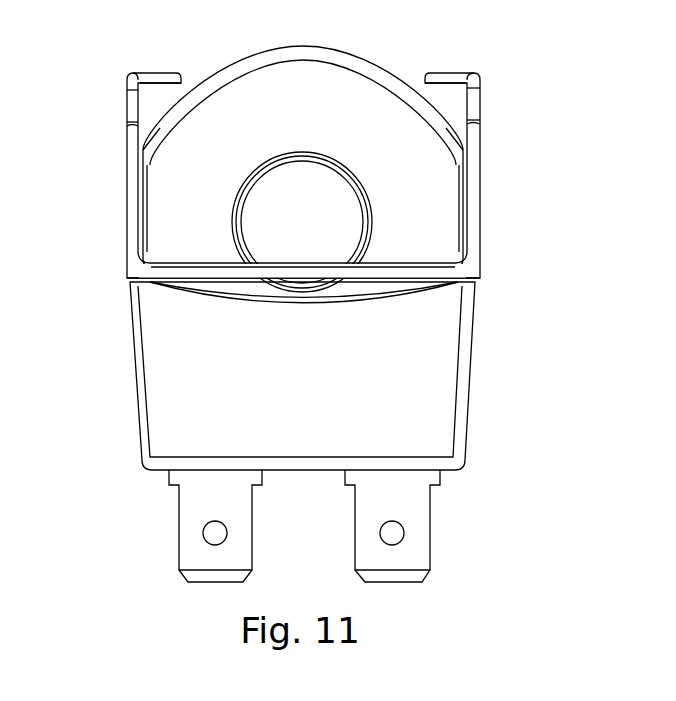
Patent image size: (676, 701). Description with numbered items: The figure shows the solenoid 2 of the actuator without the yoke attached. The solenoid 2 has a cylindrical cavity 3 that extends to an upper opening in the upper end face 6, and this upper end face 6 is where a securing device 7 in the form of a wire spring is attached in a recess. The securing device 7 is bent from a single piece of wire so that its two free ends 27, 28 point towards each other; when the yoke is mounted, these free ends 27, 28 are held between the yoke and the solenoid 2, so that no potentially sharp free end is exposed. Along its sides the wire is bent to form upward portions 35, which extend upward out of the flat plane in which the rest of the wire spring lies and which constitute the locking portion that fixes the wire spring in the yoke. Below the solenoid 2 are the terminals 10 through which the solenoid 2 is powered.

The solenoid 2 is at (552, 294).
The cylindrical cavity 3 is at (295, 233).
The upper end face 6 is at (435, 387).
The securing device 7 is at (131, 167).
The terminals 10 is at (195, 557).
The free end 27 is at (423, 72).
The free end 28 is at (180, 72).
The upward portions 35 is at (127, 107).